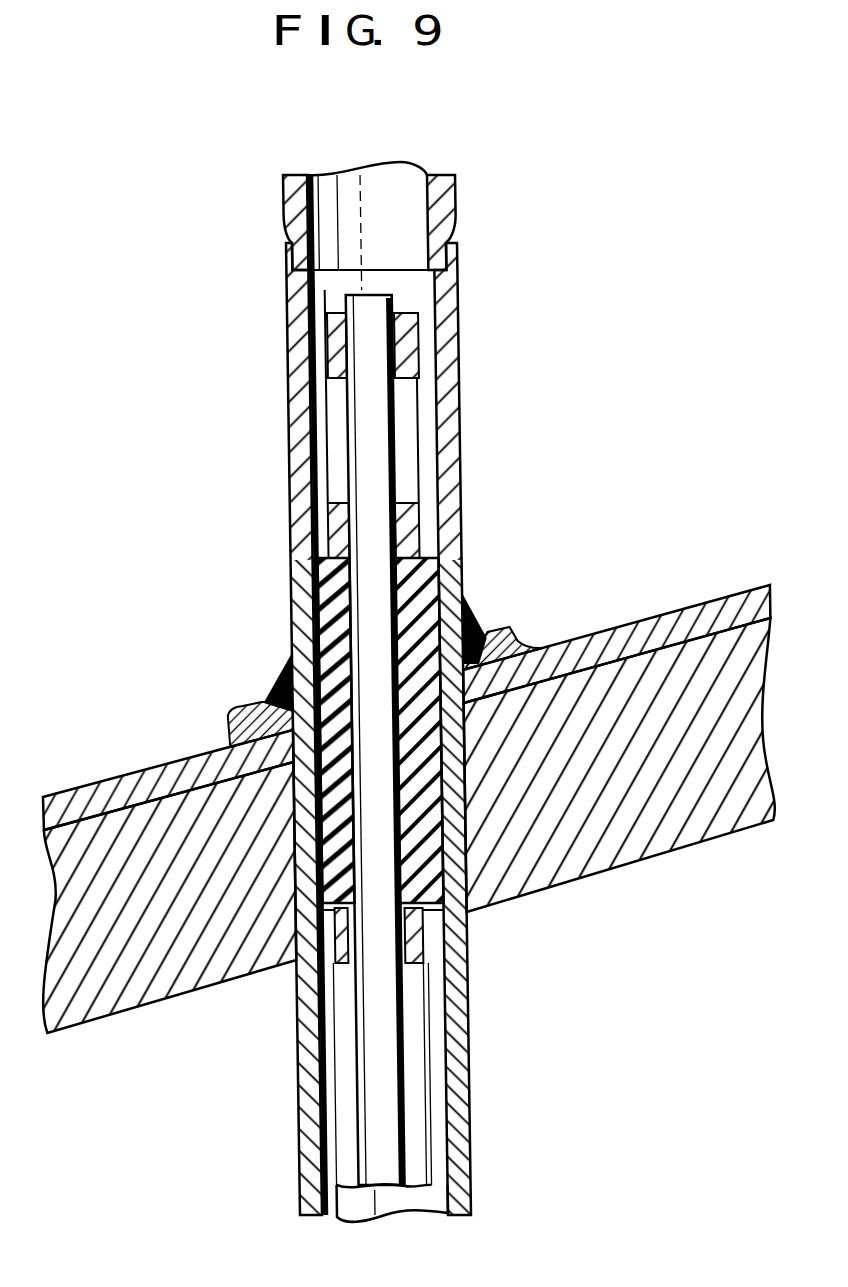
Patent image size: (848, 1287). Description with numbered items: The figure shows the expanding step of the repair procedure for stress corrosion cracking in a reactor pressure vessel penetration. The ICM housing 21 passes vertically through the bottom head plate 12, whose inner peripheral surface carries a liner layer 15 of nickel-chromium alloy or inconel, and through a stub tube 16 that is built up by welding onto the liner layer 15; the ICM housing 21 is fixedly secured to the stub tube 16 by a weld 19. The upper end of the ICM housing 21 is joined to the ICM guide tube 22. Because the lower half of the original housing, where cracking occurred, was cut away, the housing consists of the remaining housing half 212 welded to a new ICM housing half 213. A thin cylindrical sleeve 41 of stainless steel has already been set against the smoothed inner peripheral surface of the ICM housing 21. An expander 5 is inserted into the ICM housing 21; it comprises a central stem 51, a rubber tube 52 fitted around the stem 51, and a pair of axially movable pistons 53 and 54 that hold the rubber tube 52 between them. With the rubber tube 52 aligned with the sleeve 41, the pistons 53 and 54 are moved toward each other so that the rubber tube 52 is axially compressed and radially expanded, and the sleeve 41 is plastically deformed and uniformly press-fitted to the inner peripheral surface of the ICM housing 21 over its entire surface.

The expander 5 is at (407, 533).
The bottom head plate 12 is at (638, 843).
The liner layer 15 is at (655, 627).
The stub tube 16 is at (530, 650).
The weld 19 is at (473, 622).
The ICM housing 21 is at (457, 1012).
The ICM guide tube 22 is at (454, 208).
The sleeve 41 is at (300, 597).
The stem 51 is at (374, 1100).
The rubber tube 52 is at (435, 560).
The piston 53 is at (328, 527).
The piston 54 is at (330, 945).
The remaining housing half 212 is at (454, 375).
The new ICM housing half 213 is at (442, 1073).